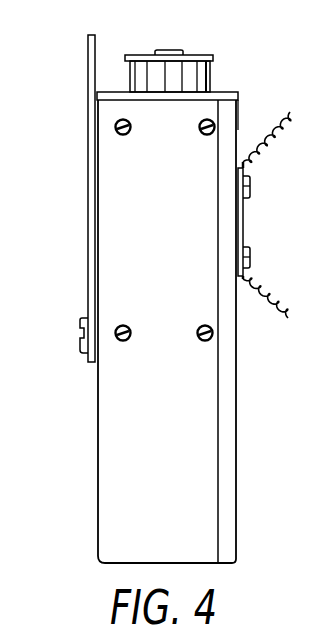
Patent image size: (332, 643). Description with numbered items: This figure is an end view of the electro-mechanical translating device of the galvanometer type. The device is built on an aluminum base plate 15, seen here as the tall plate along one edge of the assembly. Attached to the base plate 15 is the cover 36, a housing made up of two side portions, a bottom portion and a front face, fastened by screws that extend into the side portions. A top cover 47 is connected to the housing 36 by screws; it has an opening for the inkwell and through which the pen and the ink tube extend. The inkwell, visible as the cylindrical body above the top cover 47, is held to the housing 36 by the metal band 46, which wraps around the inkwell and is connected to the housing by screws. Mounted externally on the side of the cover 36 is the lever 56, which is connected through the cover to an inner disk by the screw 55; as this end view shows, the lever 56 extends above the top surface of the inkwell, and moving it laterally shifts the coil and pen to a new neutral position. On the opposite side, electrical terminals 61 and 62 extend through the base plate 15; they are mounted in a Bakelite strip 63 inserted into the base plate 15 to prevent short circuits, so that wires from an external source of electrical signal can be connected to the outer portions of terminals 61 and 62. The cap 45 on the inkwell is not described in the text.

The base plate 15 is at (233, 386).
The cover 36 is at (108, 433).
The knob 45 is at (176, 53).
The metal band 46 is at (210, 80).
The top cover 47 is at (238, 97).
The screw 55 is at (80, 322).
The lever 56 is at (88, 226).
The electrical terminal 61 is at (250, 194).
The electrical terminal 62 is at (250, 268).
The Bakelite strip 63 is at (238, 232).